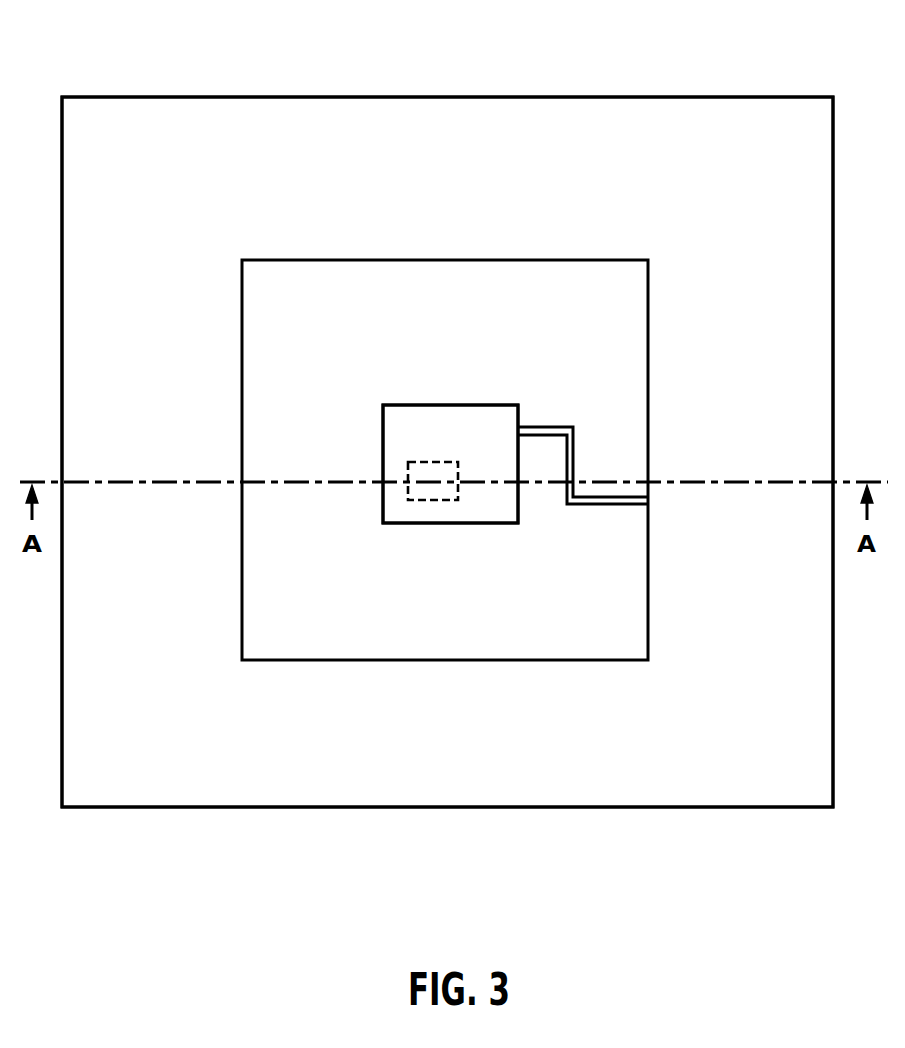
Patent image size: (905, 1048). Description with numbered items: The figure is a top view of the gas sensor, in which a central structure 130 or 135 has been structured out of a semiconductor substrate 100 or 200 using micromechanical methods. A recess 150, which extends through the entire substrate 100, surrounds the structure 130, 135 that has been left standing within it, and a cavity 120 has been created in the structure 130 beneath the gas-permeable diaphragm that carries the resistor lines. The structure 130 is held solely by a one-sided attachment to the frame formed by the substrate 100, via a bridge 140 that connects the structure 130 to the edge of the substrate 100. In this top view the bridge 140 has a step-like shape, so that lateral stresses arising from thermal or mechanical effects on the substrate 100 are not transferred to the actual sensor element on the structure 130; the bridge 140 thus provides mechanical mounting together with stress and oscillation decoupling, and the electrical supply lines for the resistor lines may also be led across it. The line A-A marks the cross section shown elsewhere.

The substrate 100 is at (160, 113).
The substrate 200 is at (447, 452).
The recess 150 is at (310, 278).
The central structure 130 is at (518, 545).
The central structure 135 is at (450, 464).
The cavity 120 is at (410, 470).
The bridge 140 is at (573, 455).